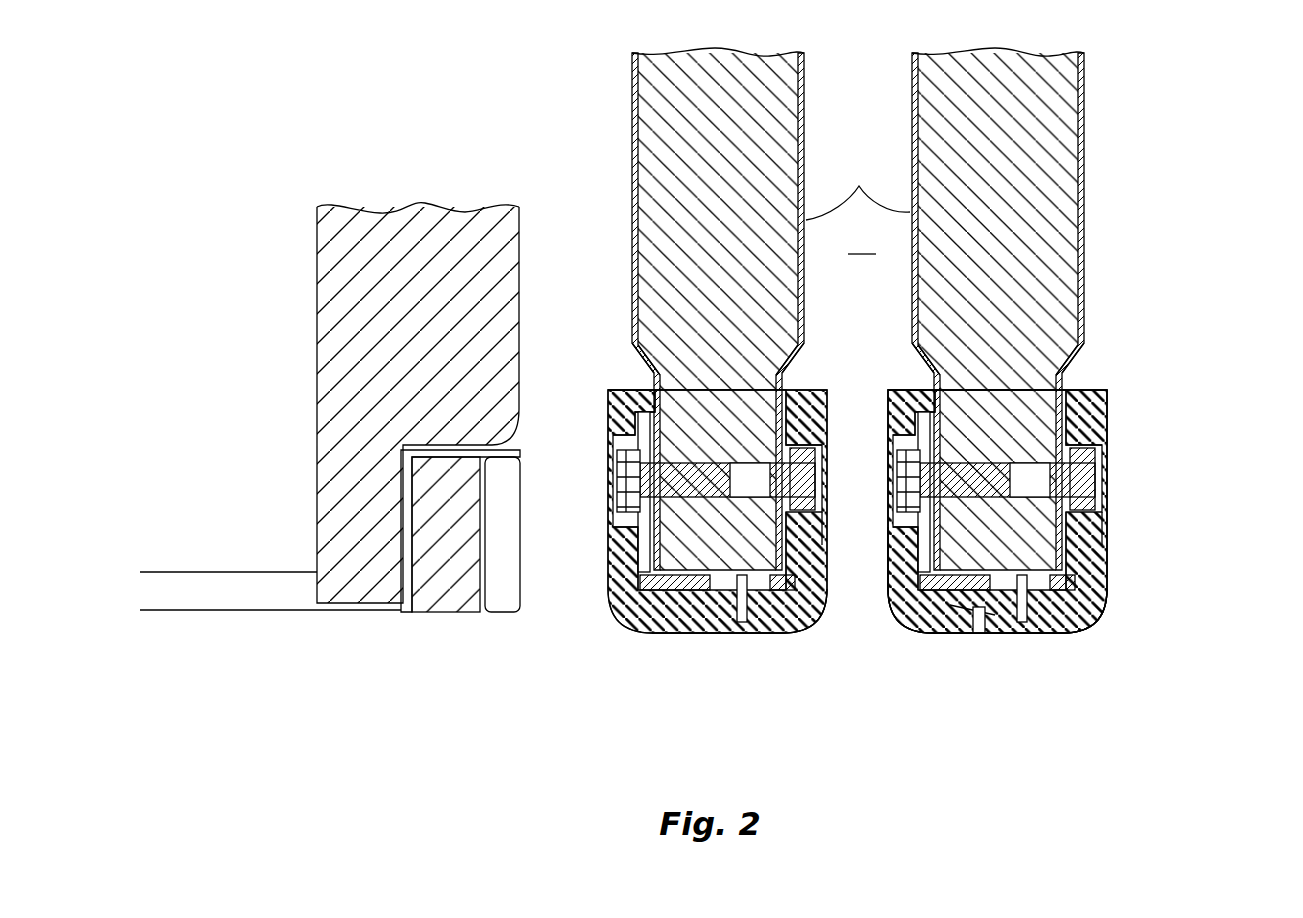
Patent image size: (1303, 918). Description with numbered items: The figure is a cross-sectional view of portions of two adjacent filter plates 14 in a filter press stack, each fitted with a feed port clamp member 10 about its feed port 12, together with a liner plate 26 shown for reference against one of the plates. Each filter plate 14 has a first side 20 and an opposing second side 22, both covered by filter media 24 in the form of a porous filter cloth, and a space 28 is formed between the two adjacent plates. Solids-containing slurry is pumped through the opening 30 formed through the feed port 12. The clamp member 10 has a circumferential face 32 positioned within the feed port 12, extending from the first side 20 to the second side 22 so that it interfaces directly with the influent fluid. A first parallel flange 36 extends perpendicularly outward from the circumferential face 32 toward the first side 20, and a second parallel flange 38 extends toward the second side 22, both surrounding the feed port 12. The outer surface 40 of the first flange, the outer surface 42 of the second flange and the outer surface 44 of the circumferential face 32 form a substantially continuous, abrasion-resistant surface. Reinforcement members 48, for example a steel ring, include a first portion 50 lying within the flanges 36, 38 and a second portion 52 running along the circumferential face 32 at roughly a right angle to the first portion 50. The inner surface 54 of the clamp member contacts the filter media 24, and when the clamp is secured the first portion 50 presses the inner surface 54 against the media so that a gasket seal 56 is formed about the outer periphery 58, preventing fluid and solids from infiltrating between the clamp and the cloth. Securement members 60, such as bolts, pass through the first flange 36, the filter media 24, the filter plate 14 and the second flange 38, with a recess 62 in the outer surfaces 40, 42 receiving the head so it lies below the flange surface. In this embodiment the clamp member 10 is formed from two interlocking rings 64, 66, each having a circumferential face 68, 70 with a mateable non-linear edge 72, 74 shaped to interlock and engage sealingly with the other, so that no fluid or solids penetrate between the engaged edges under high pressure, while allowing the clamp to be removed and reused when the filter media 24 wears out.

The feed port clamp member 10 is at (590, 617).
The feed port 12 is at (672, 628).
The filter plate 14 is at (650, 138).
The first side 20 is at (808, 152).
The second side 22 is at (636, 258).
The filter media 24 is at (632, 192).
The liner plate 26 is at (330, 415).
The space 28 is at (861, 242).
The opening 30 is at (1144, 690).
The circumferential face 32 is at (707, 652).
The first parallel flange 36 is at (1108, 432).
The second parallel flange 38 is at (888, 575).
The outer surface of first parallel flange 40 is at (1108, 545).
The outer surface of second parallel flange 42 is at (838, 640).
The outer surface of circumferential face 44 is at (1041, 652).
The reinforcement member 48 is at (627, 488).
The first portion of reinforcement member 50 is at (888, 537).
The second portion of reinforcement member 52 is at (912, 612).
The inner surface 54 is at (612, 578).
The gasket seal 56 is at (650, 385).
The outer periphery 58 is at (613, 393).
The securement member 60 is at (620, 445).
The recess 62 is at (628, 428).
The first interlocking ring 64 is at (1108, 612).
The second interlocking ring 66 is at (925, 634).
The circumferential face of first interlocking ring 68 is at (1094, 630).
The circumferential face of second interlocking ring 70 is at (953, 652).
The mateable non-linear edge of first ring 72 is at (1000, 634).
The mateable non-linear edge of second ring 74 is at (977, 636).